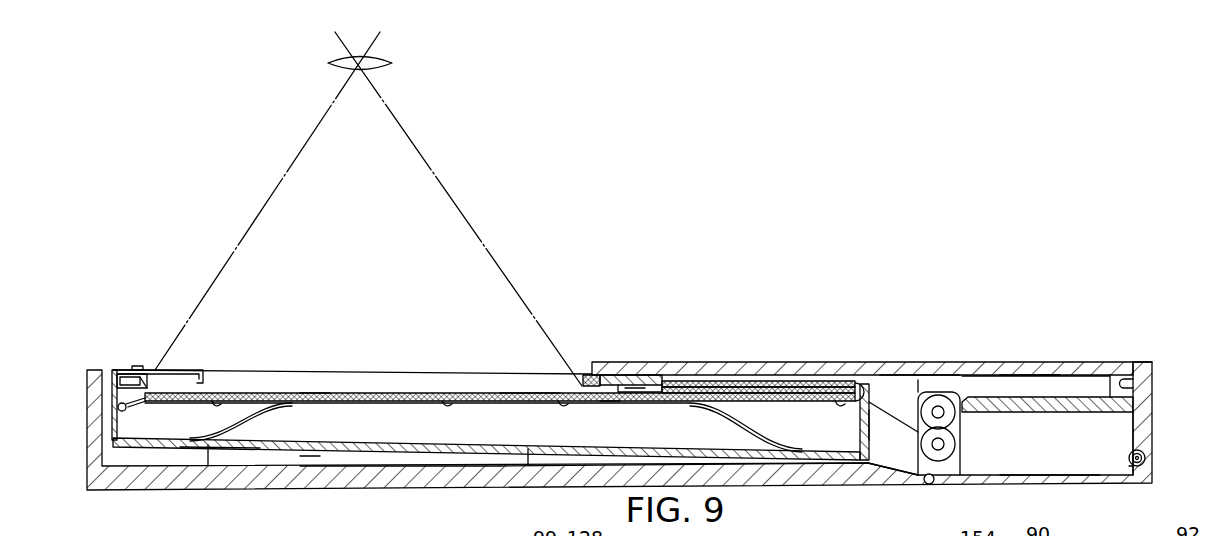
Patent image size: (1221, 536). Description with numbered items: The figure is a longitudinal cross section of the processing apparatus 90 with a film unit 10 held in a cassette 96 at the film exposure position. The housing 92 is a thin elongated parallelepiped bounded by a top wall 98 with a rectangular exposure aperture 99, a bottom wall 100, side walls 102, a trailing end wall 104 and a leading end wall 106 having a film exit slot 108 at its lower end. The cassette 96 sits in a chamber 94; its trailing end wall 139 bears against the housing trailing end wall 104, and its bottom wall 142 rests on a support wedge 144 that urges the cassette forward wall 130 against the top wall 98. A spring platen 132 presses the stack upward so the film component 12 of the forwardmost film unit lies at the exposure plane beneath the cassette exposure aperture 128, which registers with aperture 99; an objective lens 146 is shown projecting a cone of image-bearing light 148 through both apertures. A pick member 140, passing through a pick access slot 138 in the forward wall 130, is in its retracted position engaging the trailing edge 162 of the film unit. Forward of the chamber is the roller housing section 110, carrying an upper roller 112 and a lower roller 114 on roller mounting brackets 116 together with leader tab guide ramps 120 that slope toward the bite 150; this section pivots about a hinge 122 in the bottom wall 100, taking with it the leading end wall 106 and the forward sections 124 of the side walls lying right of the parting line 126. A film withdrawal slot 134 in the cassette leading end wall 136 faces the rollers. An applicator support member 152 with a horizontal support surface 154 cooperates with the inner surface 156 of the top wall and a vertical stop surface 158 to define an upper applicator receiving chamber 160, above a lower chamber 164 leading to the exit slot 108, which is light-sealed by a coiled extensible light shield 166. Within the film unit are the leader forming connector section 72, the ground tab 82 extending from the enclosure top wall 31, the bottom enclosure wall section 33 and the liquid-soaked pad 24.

The film unit 10 is at (218, 405).
The film component 12 is at (314, 391).
The liquid-soaked pad 24 is at (735, 383).
The enclosure top wall 31 is at (782, 382).
The bottom enclosure wall section 33 is at (756, 404).
The leader forming connector section 72 is at (605, 399).
The ground tab 82 is at (636, 386).
The processing apparatus 90 is at (1011, 356).
The housing 92 is at (1155, 361).
The chamber 94 is at (240, 456).
The cassette 96 is at (880, 450).
The top wall 98 is at (910, 370).
The exposure aperture 99 is at (532, 380).
The bottom wall 100 is at (802, 477).
The side walls 102 is at (116, 465).
The trailing end wall 104 is at (95, 437).
The leading end wall 106 is at (1152, 406).
The film exit slot 108 is at (1146, 461).
The roller housing section 110 is at (1017, 478).
The upper roller 112 is at (941, 406).
The lower roller 114 is at (950, 446).
The roller mounting brackets 116 is at (957, 462).
The leader tab guide ramps 120 is at (920, 430).
The hinge 122 is at (933, 484).
The forward sections of the side walls 124 is at (1056, 396).
The parting line 126 is at (946, 392).
The exposure aperture 128 is at (583, 376).
The forward wall 130 is at (633, 402).
The spring platen 132 is at (262, 410).
The film withdrawal slot 134 is at (866, 384).
The cassette leading end wall 136 is at (868, 418).
The pick access slot 138 is at (116, 375).
The cassette trailing end wall 139 is at (112, 400).
The pick member 140 is at (186, 371).
The cassette bottom wall 142 is at (313, 457).
The support wedge 144 is at (420, 462).
The objective lens 146 is at (376, 58).
The cone of image-bearing light 148 is at (478, 241).
The nip or bite 150 is at (956, 420).
The applicator support member 152 is at (1106, 413).
The upper horizontal support surface 154 is at (1111, 388).
The horizontal inner surface 156 is at (1050, 378).
The vertical stop surface 158 is at (1133, 384).
The upper applicator receiving chamber 160 is at (1034, 379).
The trailing edge 162 is at (122, 411).
The lower chamber 164 is at (1053, 446).
The extensible light shield 166 is at (1129, 461).